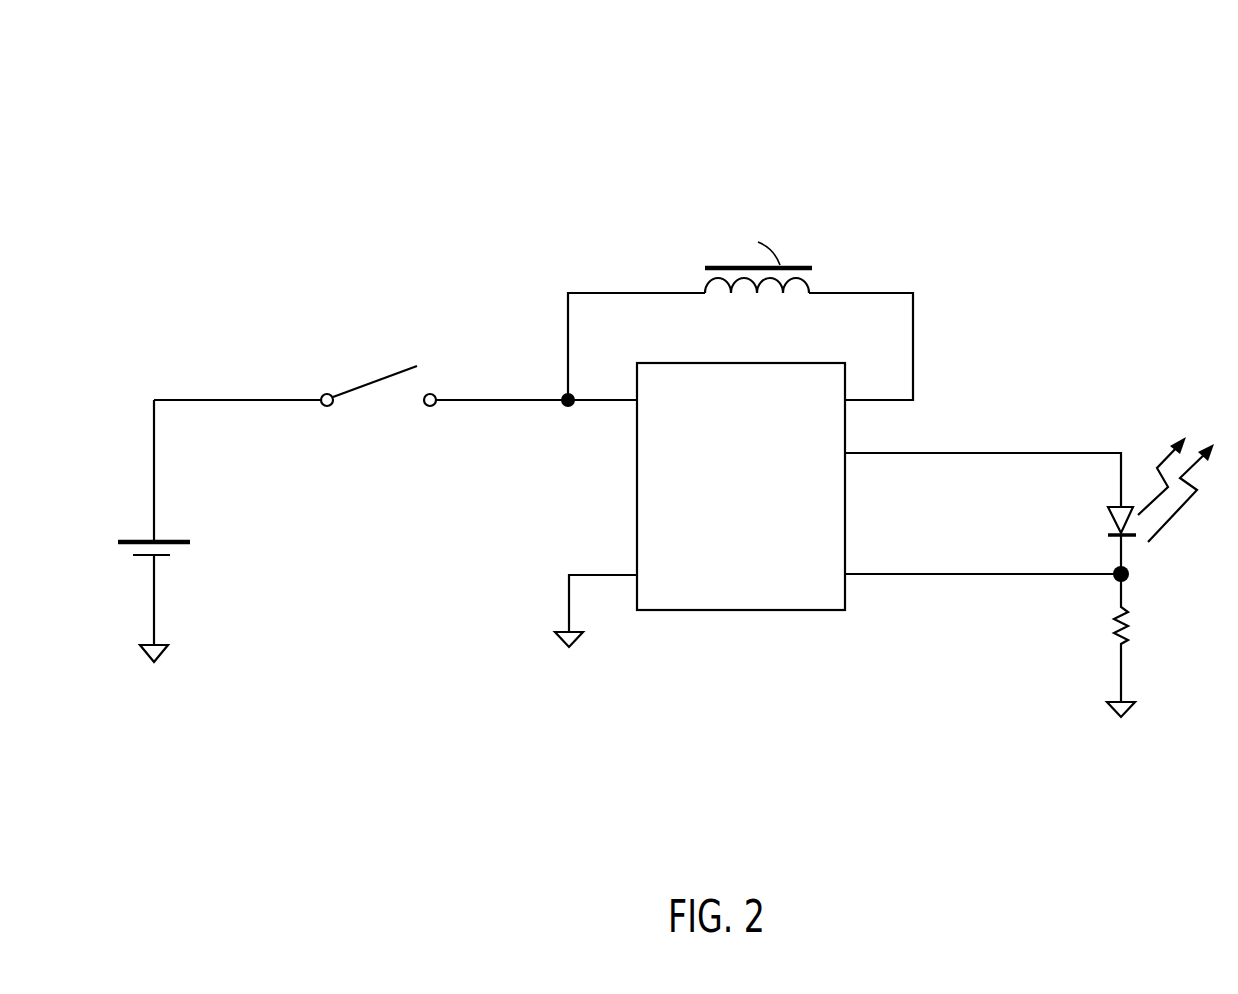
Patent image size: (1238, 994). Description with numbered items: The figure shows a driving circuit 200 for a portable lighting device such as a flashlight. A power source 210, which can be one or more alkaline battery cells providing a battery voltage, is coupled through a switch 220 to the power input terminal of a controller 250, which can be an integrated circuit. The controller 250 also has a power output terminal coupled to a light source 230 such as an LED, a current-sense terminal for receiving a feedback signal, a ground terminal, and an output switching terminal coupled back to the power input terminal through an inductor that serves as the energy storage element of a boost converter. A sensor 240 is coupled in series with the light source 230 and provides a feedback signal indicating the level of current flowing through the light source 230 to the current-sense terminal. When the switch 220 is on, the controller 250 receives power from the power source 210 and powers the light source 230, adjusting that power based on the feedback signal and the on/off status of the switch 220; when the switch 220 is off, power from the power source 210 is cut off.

The driving circuit 200 is at (230, 103).
The power source 210 is at (138, 538).
The switch 220 is at (388, 377).
The light source 230 is at (1118, 507).
The sensor 240 is at (1122, 638).
The controller 250 is at (740, 618).